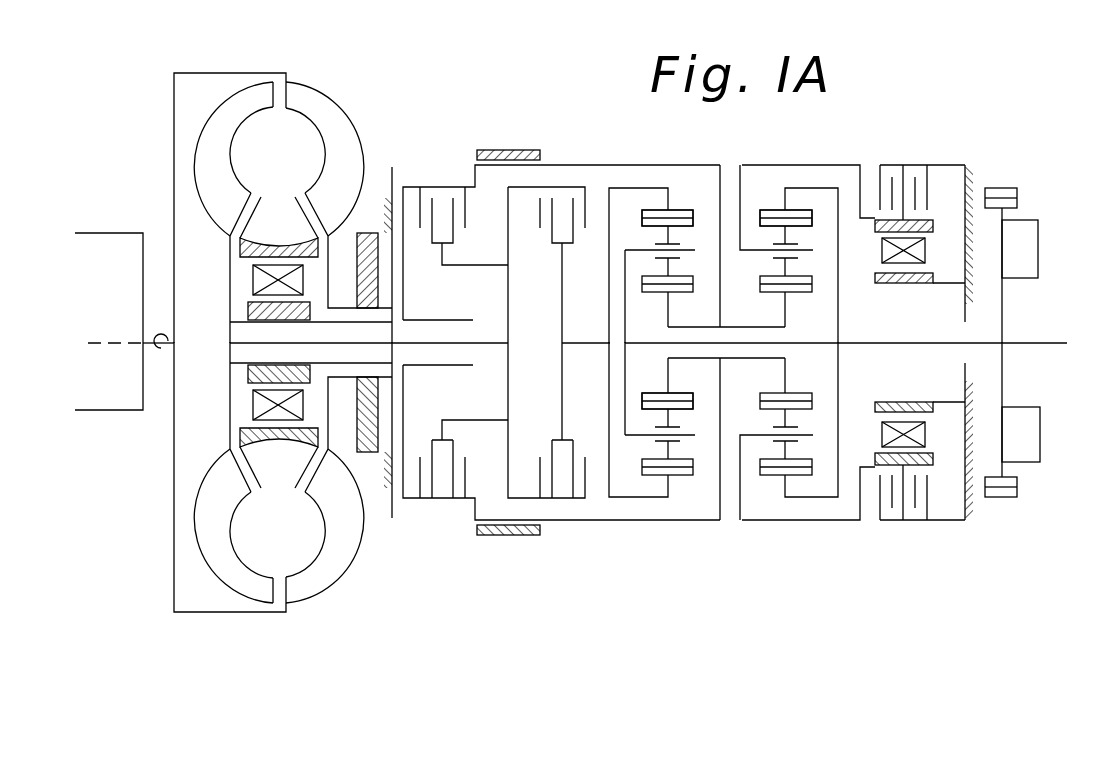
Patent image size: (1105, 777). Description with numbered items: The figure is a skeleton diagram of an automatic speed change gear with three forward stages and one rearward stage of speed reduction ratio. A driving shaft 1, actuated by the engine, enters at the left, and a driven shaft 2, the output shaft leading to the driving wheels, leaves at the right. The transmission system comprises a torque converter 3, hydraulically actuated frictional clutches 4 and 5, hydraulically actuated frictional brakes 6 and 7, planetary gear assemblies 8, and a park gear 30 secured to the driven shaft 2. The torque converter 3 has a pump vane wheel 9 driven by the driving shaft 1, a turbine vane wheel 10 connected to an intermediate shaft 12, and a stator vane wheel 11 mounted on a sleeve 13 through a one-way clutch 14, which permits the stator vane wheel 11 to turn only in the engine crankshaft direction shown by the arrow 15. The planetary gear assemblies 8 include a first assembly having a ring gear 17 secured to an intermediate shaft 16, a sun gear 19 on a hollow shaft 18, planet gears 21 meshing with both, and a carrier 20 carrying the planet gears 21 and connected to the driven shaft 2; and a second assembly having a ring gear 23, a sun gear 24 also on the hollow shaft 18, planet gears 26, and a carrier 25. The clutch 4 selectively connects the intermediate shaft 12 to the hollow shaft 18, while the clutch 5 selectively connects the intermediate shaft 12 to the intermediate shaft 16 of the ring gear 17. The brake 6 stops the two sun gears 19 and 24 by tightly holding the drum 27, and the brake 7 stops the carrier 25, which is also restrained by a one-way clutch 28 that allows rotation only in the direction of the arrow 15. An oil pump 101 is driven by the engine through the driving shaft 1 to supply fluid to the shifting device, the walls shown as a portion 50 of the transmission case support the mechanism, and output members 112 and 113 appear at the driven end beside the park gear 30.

The driving shaft 1 is at (151, 338).
The driven shaft 2 is at (1033, 342).
The torque converter 3 is at (334, 97).
The frictional clutch 4 is at (440, 186).
The frictional clutch 5 is at (573, 185).
The frictional brake 6 is at (507, 150).
The frictional brake 7 is at (898, 163).
The planetary gear assemblies 8 is at (682, 208).
The pump vane wheel 9 is at (348, 139).
The turbine vane wheel 10 is at (226, 170).
The stator vane wheel 11 is at (277, 212).
The intermediate shaft 12 is at (240, 345).
The sleeve 13 is at (372, 323).
The one-way clutch 14 is at (252, 277).
The arrow 15 is at (170, 335).
The intermediate shaft 16 is at (582, 341).
The ring gear 17 is at (641, 209).
The hollow shaft 18 is at (742, 359).
The sun gear 19 is at (678, 294).
The carrier 20 is at (626, 305).
The planet gears 21 is at (686, 262).
The ring gear 23 is at (800, 209).
The sun gear 24 is at (772, 294).
The carrier 25 is at (738, 240).
The planet gears 26 is at (773, 272).
The drum 27 is at (556, 164).
The one-way clutch 28 is at (880, 256).
The park gear 30 is at (1003, 187).
The portion of the transmission case 50 is at (391, 182).
The oil pump 101 is at (373, 455).
The output member 112 is at (1041, 443).
The output member 113 is at (1035, 249).